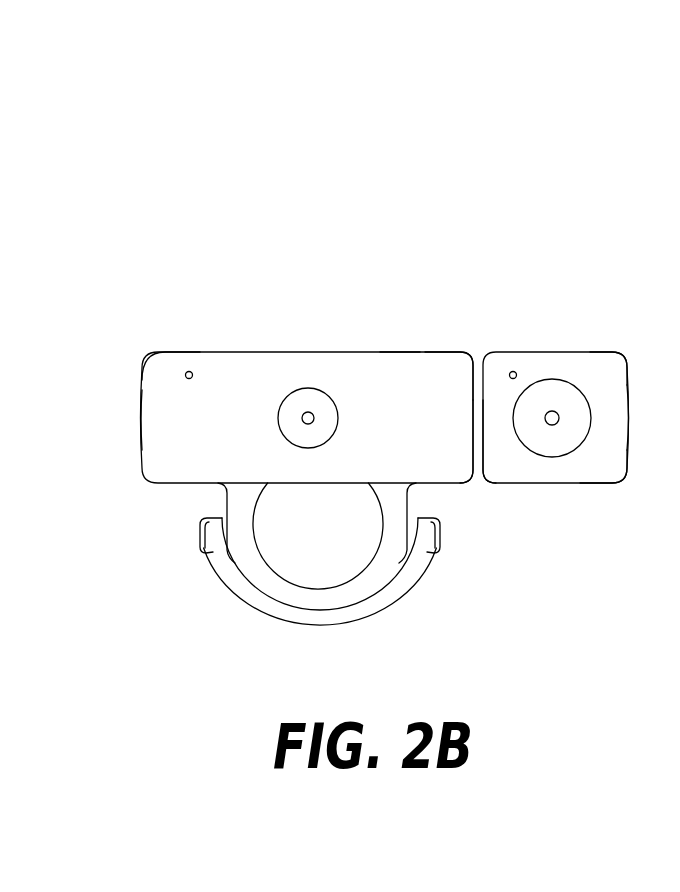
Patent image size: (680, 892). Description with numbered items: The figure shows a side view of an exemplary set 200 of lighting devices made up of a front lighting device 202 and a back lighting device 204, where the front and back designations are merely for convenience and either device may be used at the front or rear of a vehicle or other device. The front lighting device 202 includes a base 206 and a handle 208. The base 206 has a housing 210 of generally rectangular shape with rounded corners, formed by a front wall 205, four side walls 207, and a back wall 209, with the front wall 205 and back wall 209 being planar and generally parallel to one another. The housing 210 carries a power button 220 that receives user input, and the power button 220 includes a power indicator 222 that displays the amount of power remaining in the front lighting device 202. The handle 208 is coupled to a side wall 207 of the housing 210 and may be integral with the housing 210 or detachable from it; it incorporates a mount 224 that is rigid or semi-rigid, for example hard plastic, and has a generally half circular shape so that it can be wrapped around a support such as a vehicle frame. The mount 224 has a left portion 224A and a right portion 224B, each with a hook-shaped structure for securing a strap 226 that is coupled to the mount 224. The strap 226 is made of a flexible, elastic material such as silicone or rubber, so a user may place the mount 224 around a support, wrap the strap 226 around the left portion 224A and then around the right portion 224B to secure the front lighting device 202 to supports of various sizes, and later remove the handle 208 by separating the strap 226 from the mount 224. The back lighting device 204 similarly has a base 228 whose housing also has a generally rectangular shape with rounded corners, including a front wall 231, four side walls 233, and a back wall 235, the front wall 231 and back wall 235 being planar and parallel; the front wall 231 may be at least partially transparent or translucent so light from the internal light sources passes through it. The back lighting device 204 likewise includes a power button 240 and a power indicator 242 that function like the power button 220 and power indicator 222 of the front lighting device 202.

The set of lighting devices 200 is at (277, 90).
The front lighting device 202 is at (192, 285).
The back lighting device 204 is at (599, 265).
The base 206 is at (160, 336).
The base 228 is at (620, 335).
The housing 210 is at (392, 350).
The side walls 207 is at (437, 383).
The front wall 205 is at (141, 416).
The back wall 209 is at (474, 484).
The back wall 235 is at (481, 484).
The front wall 231 is at (627, 410).
The side walls 233 is at (585, 484).
The power button 220 is at (287, 430).
The power indicator 222 is at (309, 413).
The power button 240 is at (542, 395).
The power indicator 242 is at (552, 412).
The mount 224 is at (222, 500).
The left portion 224A is at (240, 512).
The right portion 224B is at (395, 515).
The strap 226 is at (277, 620).
The handle 208 is at (195, 604).